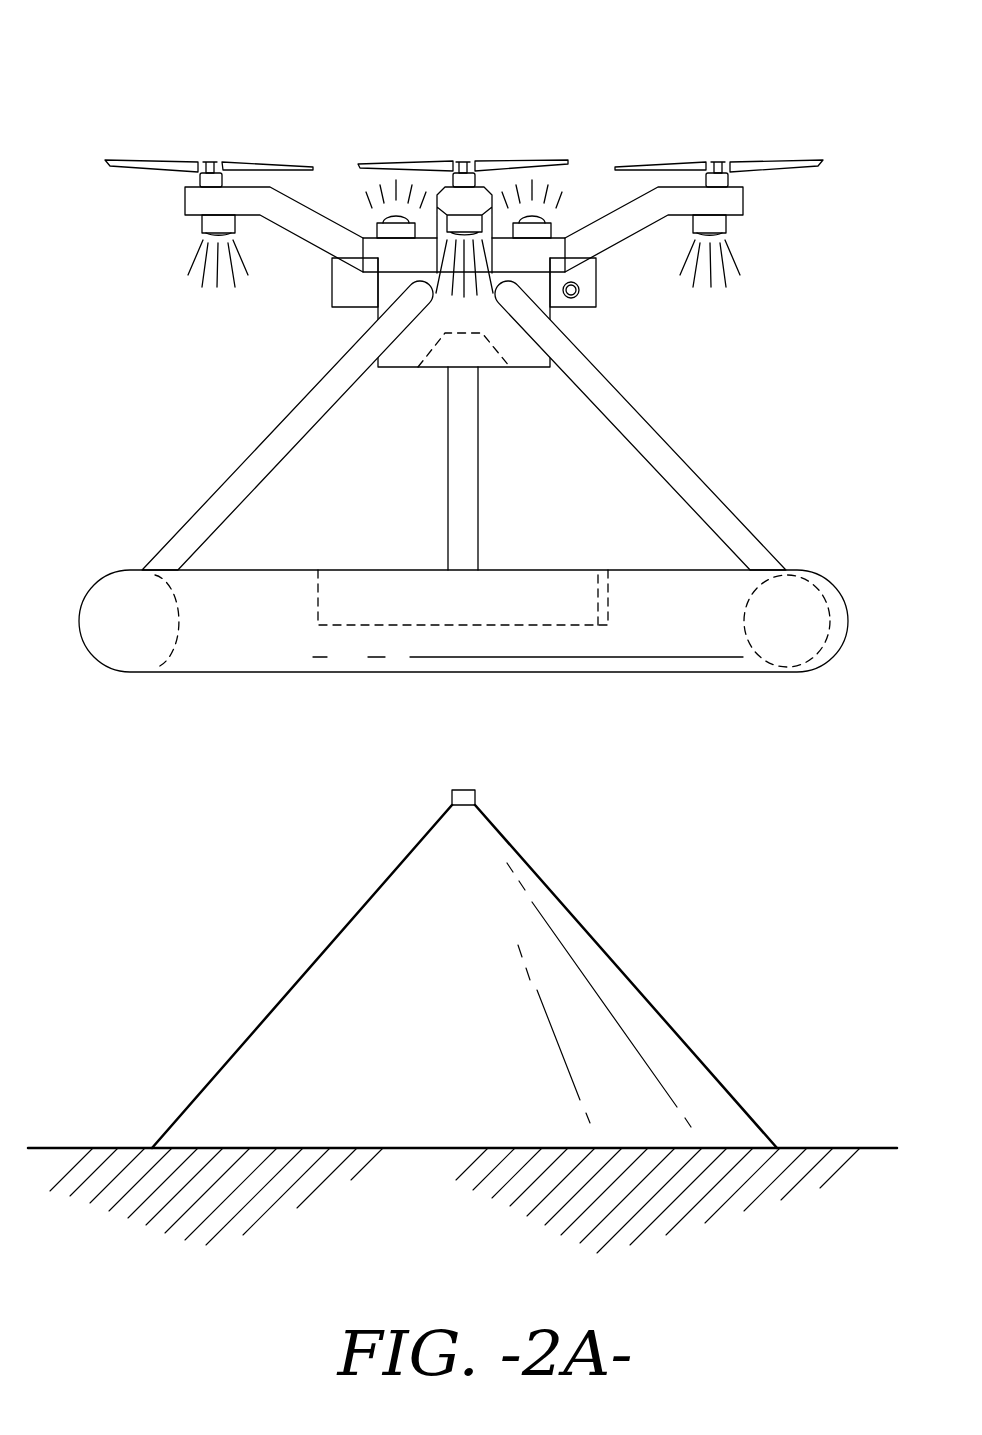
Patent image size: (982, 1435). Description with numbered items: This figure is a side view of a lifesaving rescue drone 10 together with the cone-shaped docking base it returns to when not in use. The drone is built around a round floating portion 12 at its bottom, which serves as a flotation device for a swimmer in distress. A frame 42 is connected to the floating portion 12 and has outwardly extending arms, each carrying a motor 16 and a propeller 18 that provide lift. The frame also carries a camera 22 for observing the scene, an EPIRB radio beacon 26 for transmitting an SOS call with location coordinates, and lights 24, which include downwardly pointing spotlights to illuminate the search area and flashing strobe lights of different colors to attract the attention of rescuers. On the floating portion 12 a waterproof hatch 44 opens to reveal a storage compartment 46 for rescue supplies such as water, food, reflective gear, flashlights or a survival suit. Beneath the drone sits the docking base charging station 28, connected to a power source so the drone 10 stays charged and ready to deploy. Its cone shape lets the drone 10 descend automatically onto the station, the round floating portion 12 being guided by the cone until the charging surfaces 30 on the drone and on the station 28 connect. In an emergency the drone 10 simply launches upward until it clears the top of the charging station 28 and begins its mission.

The rescue drone 10 is at (276, 84).
The floating portion 12 is at (250, 645).
The motor 16 is at (203, 178).
The propeller 18 is at (155, 155).
The camera 22 is at (597, 295).
The lights 24 is at (203, 220).
The EPIRB radio beacon 26 is at (348, 285).
The docking base charging station 28 is at (568, 902).
The charging surfaces 30 is at (463, 338).
The frame 42 is at (608, 233).
The hatch 44 is at (375, 585).
The storage compartment 46 is at (608, 590).